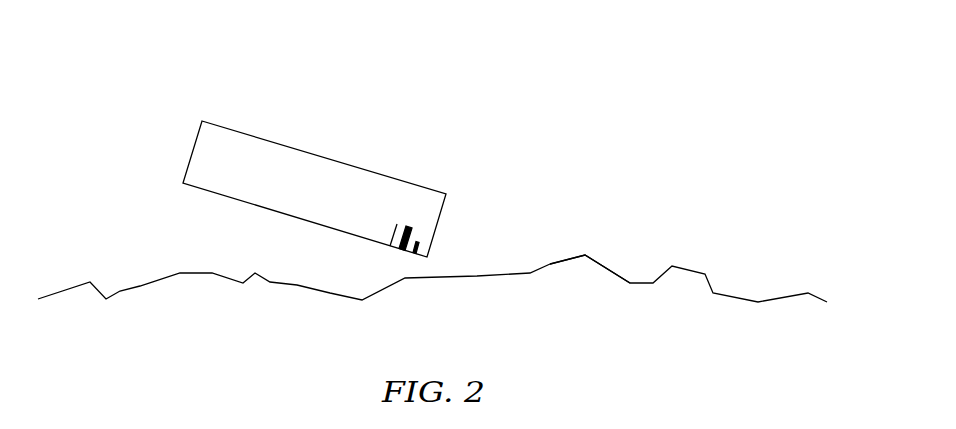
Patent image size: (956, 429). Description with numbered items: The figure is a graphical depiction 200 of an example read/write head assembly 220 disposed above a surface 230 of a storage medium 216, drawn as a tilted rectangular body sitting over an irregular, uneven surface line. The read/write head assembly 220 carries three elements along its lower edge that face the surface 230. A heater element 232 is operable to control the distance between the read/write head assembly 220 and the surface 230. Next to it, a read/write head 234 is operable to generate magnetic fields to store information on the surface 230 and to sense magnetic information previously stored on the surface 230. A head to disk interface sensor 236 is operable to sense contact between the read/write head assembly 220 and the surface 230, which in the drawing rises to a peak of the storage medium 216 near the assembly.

The vehicle system 200 is at (573, 76).
The storage medium 216 is at (496, 310).
The read/write head assembly 220 is at (237, 168).
The surface 230 is at (585, 255).
The heater element 232 is at (390, 229).
The read/write head 234 is at (408, 226).
The head to disk interface sensor 236 is at (421, 245).